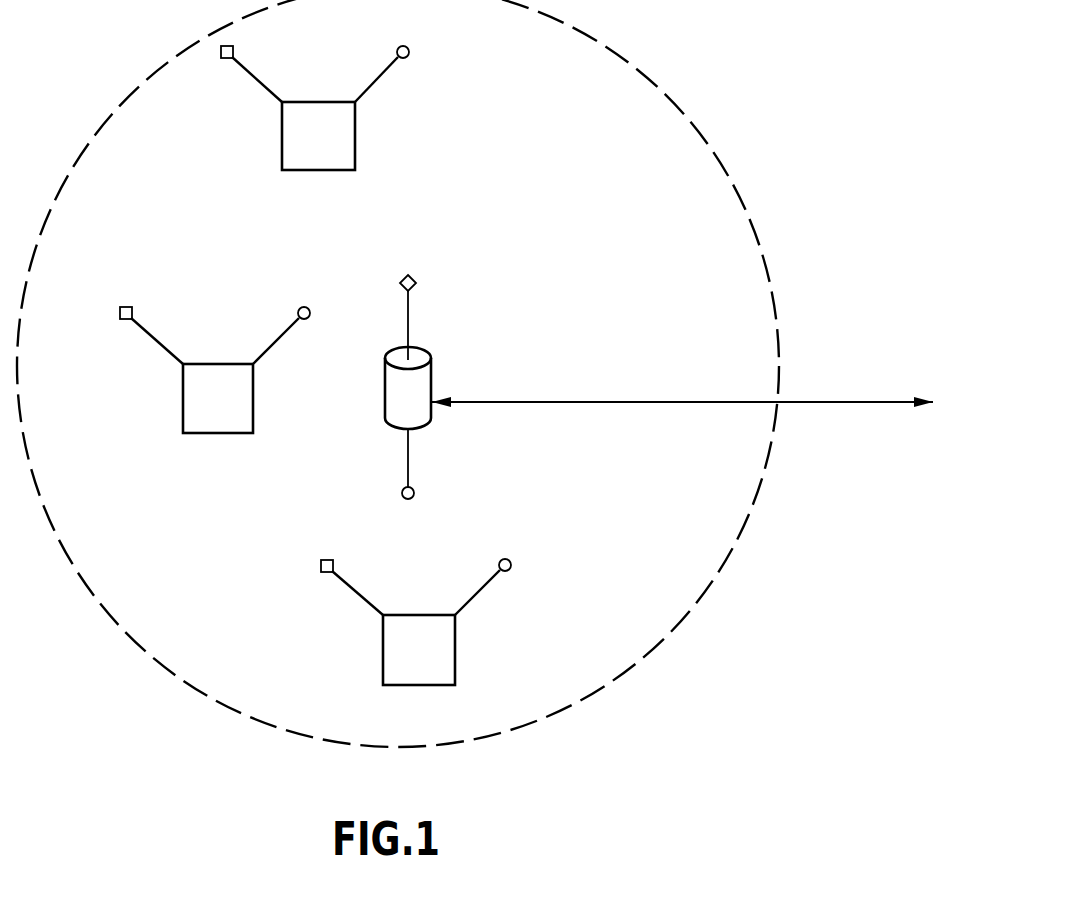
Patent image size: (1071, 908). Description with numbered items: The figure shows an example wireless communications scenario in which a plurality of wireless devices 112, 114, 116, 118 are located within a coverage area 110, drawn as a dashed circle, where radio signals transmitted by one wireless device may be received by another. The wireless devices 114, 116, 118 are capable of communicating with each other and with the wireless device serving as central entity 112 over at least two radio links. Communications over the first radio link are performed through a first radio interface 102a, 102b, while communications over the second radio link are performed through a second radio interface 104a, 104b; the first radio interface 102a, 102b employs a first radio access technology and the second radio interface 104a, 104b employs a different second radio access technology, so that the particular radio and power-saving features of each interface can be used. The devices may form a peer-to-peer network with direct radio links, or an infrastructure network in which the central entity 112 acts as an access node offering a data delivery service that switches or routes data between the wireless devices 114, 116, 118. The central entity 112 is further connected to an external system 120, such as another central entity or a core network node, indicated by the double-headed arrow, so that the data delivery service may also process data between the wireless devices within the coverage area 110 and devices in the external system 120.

The coverage area 110 is at (742, 200).
The wireless device serving as central entity 112 is at (422, 357).
The wireless device 114 is at (282, 143).
The wireless device 116 is at (205, 433).
The wireless device 118 is at (383, 657).
The first radio interface 102a is at (127, 306).
The first radio interface 102b is at (414, 280).
The second radio interface 104a is at (303, 306).
The second radio interface 104b is at (414, 489).
The external system 120 is at (820, 401).